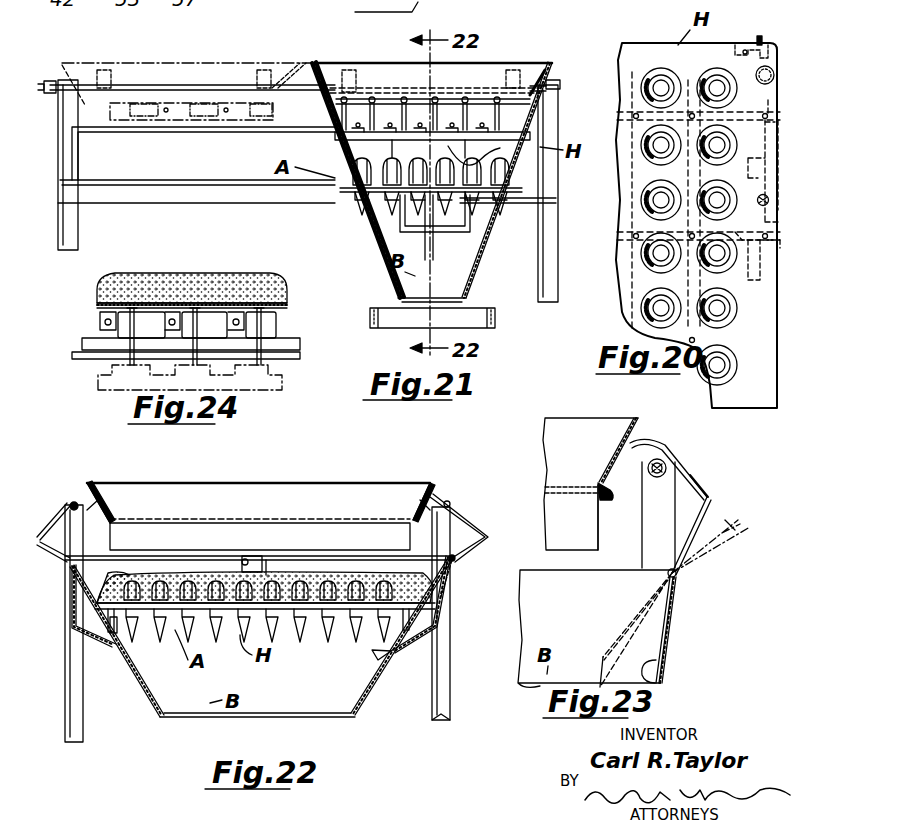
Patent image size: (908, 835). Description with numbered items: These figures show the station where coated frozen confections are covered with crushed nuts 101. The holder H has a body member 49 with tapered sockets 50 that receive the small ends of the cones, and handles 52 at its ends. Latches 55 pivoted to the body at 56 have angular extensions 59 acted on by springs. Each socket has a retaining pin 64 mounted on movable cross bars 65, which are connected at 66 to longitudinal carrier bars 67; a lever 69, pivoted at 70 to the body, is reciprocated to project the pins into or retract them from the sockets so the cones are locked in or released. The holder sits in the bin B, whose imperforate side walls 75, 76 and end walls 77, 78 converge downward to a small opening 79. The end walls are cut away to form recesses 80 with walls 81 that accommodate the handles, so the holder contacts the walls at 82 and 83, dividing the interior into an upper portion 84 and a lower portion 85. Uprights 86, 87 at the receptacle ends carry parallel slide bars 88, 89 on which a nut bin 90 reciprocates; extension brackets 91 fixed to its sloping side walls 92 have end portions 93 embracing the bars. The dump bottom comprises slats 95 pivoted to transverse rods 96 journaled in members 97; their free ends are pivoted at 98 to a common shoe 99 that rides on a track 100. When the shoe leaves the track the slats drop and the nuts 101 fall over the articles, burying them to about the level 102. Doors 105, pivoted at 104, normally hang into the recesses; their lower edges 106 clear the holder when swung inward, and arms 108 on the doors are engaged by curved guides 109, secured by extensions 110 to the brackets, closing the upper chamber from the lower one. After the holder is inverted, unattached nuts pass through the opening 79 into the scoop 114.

In FIG. 21, the body member 49 is at (431, 171).
In FIG. 20, the body member 49 is at (760, 362).
In FIG. 22, the body member 49 is at (306, 625).
In FIG. 20, the sockets 50 is at (720, 303).
In FIG. 21, the handles 52 is at (460, 200).
In FIG. 20, the handles 52 is at (778, 158).
In FIG. 22, the handles 52 is at (160, 640).
In FIG. 20, the latches 55 is at (760, 42).
In FIG. 20, the latch pivot 56 is at (738, 44).
In FIG. 20, the angular extensions 59 is at (778, 68).
In FIG. 20, the retaining element or pin 64 is at (710, 308).
In FIG. 20, the cross bars 65 is at (640, 85).
In FIG. 20, the connection 66 is at (720, 110).
In FIG. 20, the longitudinal carrier bars 67 is at (780, 248).
In FIG. 20, the lever 69 is at (778, 127).
In FIG. 20, the lever pivot 70 is at (770, 200).
In FIG. 21, the side wall 75 is at (362, 245).
In FIG. 21, the side wall 76 is at (492, 250).
In FIG. 22, the end wall 77 is at (138, 688).
In FIG. 22, the end wall 78 is at (378, 688).
In FIG. 21, the opening 79 is at (400, 298).
In FIG. 22, the opening 79 is at (280, 716).
In FIG. 21, the recesses 80 is at (400, 228).
In FIG. 22, the recesses 80 is at (455, 606).
In FIG. 22, the recess walls 81 is at (448, 636).
In FIG. 22, the contact 82 is at (110, 628).
In FIG. 21, the contact / rear side wall 83 is at (338, 212).
In FIG. 22, the upper portion 84 is at (345, 565).
In FIG. 22, the lower portion 85 is at (295, 685).
In FIG. 22, the upright 86 is at (80, 728).
In FIG. 21, the upright 87 is at (80, 232).
In FIG. 22, the upright 87 is at (452, 706).
In FIG. 22, the slide bar 88 is at (72, 503).
In FIG. 21, the slide bar 89 is at (308, 80).
In FIG. 22, the slide bar 89 is at (452, 500).
In FIG. 23, the slide bar 89 is at (670, 465).
In FIG. 21, the bin 90 is at (196, 66).
In FIG. 22, the bin 90 is at (406, 473).
In FIG. 23, the bin 90 is at (594, 407).
In FIG. 21, the extension brackets 91 is at (100, 70).
In FIG. 22, the extension brackets 91 is at (85, 490).
In FIG. 23, the extension brackets 91 is at (640, 440).
In FIG. 23, the sloping side walls 92 is at (645, 425).
In FIG. 23, the end portions 93 is at (655, 480).
In FIG. 21, the panels or slats 95 is at (490, 150).
In FIG. 24, the panels or slats 95 is at (255, 330).
In FIG. 22, the panels or slats 95 is at (278, 518).
In FIG. 23, the panels or slats 95 is at (545, 516).
In FIG. 21, the rods 96 is at (440, 100).
In FIG. 24, the rods 96 is at (185, 318).
In FIG. 23, the rods 96 is at (600, 520).
In FIG. 23, the journal members 97 is at (610, 490).
In FIG. 21, the pivot 98 is at (336, 104).
In FIG. 24, the pivot 98 is at (102, 326).
In FIG. 21, the shoe 99 is at (180, 122).
In FIG. 24, the shoe 99 is at (290, 342).
In FIG. 22, the shoe 99 is at (248, 578).
In FIG. 21, the track 100 is at (252, 122).
In FIG. 24, the track 100 is at (285, 358).
In FIG. 22, the track 100 is at (273, 572).
In FIG. 24, the crushed nuts 101 is at (240, 278).
In FIG. 22, the crushed nuts 101 is at (195, 580).
In FIG. 22, the nut level line 102 is at (132, 578).
In FIG. 22, the door pivot 104 is at (455, 556).
In FIG. 23, the door pivot 104 is at (682, 572).
In FIG. 21, the wings or closure doors 105 is at (451, 235).
In FIG. 22, the wings or closure doors 105 is at (440, 585).
In FIG. 23, the wings or closure doors 105 is at (678, 610).
In FIG. 23, the lower edges 106 is at (665, 656).
In FIG. 23, the arms or extensions 108 is at (720, 520).
In FIG. 21, the curved track or guide 109 is at (555, 143).
In FIG. 23, the curved track or guide 109 is at (715, 492).
In FIG. 21, the extension 110 is at (372, 92).
In FIG. 23, the extension 110 is at (708, 468).
In FIG. 21, the scoop or hopper 114 is at (495, 320).